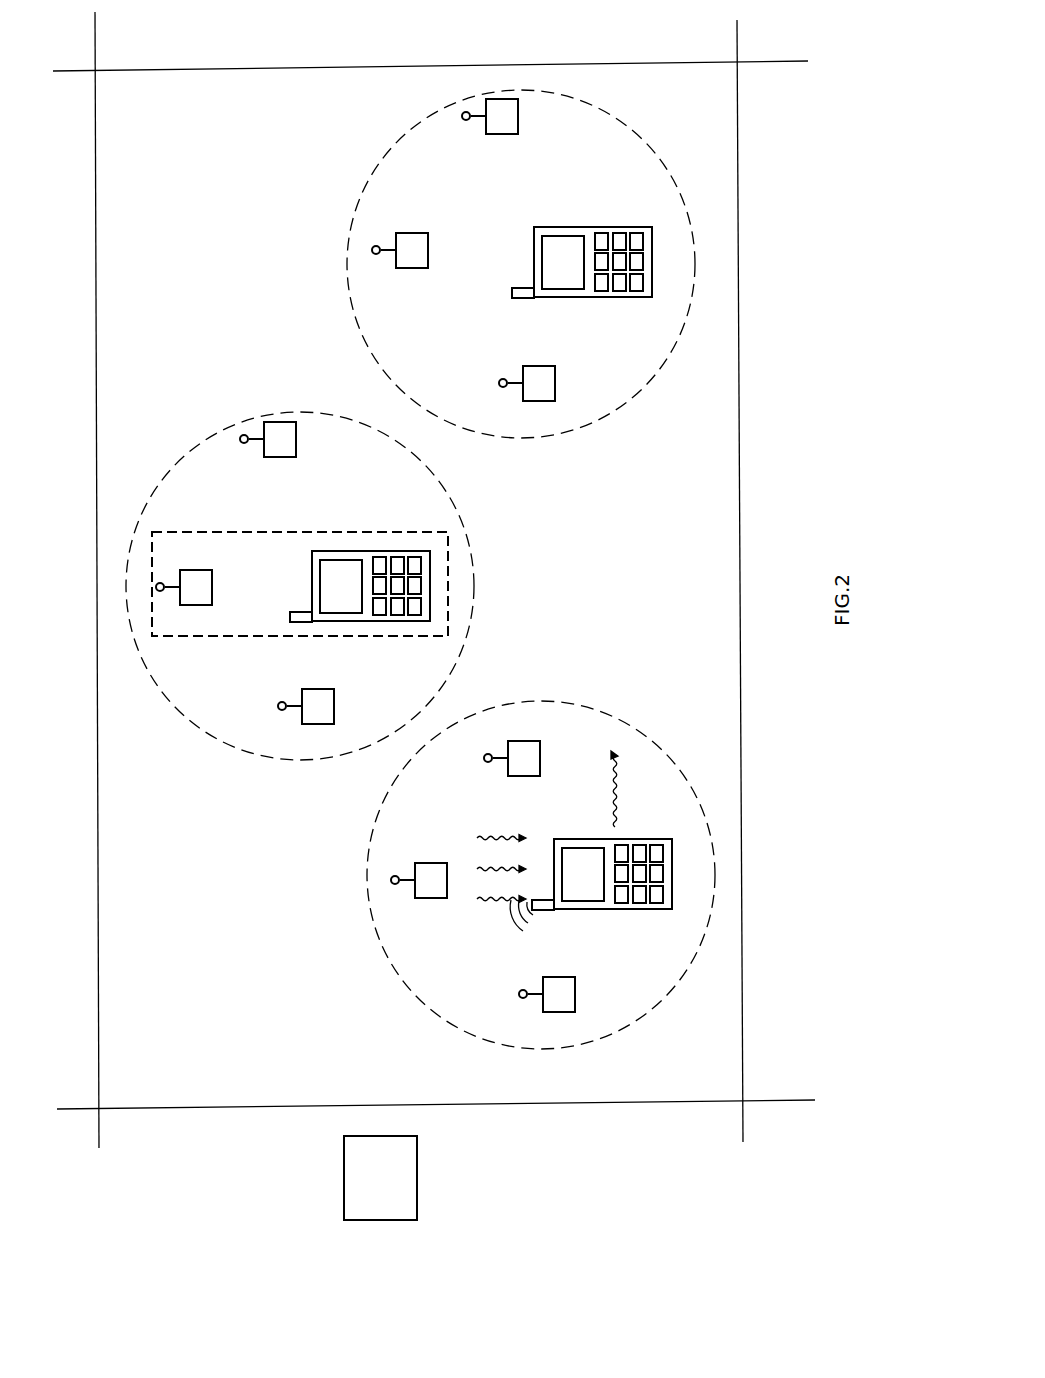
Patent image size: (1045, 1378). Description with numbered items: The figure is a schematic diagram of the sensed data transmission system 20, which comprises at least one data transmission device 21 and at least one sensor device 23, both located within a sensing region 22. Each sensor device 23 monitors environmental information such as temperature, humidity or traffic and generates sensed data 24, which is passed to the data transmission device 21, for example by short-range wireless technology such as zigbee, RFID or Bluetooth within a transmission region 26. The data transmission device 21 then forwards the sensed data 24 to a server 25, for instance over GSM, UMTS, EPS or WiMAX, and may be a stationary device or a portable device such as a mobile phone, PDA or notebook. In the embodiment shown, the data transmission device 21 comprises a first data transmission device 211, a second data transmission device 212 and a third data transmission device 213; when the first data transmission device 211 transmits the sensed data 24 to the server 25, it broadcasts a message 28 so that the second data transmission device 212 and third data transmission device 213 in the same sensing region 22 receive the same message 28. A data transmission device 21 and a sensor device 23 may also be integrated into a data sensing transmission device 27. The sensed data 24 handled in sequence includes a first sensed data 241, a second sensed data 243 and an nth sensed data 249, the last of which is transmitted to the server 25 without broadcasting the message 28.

The data transmission system 20 is at (165, 1144).
The data transmission device 21 is at (260, 918).
The sensing region 22 is at (217, 78).
The sensor device 23 is at (495, 134).
The sensed data 24 is at (290, 918).
The server 25 is at (344, 1182).
The transmission region 26 is at (200, 452).
The data sensing transmission device 27 is at (232, 630).
The message 28 is at (535, 924).
The first data transmission device 211 is at (648, 908).
The second data transmission device 212 is at (390, 619).
The third data transmission device 213 is at (608, 298).
The first sensed data 241 is at (489, 903).
The second sensed data 243 is at (513, 870).
The nth sensed data 249 is at (489, 843).